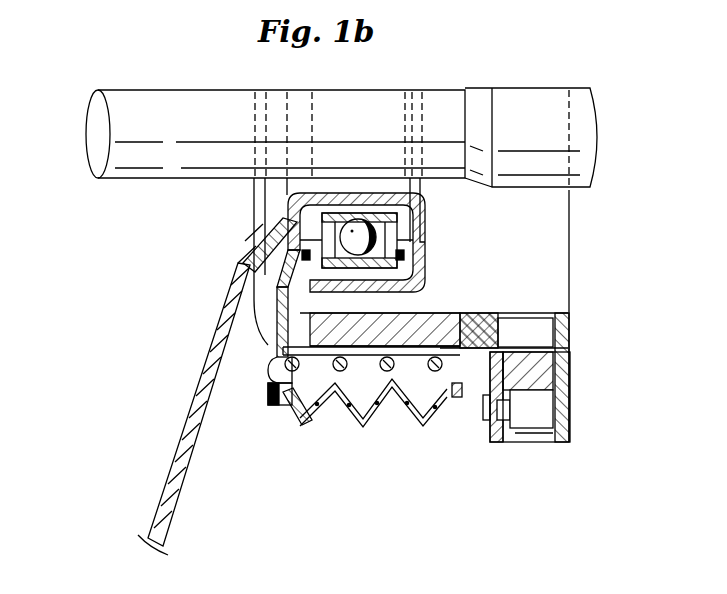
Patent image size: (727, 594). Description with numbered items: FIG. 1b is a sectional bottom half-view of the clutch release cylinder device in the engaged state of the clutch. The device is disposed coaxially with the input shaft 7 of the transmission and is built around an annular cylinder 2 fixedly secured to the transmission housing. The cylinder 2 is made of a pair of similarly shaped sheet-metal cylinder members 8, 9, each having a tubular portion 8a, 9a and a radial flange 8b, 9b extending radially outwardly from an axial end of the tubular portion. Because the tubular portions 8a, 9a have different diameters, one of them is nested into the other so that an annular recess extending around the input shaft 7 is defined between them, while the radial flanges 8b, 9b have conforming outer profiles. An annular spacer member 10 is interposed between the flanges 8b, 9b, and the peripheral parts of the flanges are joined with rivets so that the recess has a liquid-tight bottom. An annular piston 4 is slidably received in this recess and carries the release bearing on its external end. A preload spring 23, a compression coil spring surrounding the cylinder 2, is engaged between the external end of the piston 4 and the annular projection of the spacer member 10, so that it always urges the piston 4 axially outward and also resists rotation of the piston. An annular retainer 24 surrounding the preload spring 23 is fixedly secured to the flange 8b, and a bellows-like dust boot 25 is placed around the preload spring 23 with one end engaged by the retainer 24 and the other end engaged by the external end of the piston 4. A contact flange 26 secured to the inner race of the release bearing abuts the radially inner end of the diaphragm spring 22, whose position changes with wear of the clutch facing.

The input shaft 7 is at (97, 133).
The annular cylinder 2 is at (563, 355).
The cylinder member 9 is at (545, 271).
The tubular portion 9a is at (446, 313).
The radial flange 9b is at (568, 345).
The cylinder member 8 is at (504, 433).
The tubular portion 8a is at (466, 352).
The radial flange 8b is at (498, 437).
The annular spacer member 10 is at (540, 442).
The annular piston 4 is at (298, 415).
The preload spring 23 is at (338, 372).
The dust boot 25 is at (365, 428).
The annular retainer 24 is at (456, 400).
The contact flange 26 is at (266, 292).
The diaphragm spring 22 is at (193, 424).